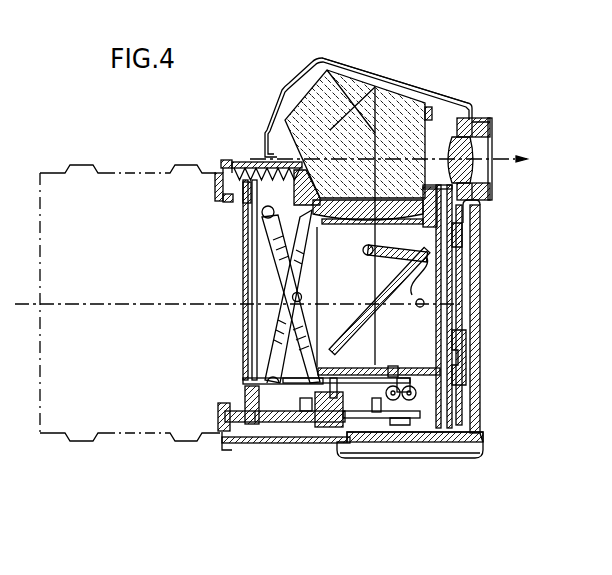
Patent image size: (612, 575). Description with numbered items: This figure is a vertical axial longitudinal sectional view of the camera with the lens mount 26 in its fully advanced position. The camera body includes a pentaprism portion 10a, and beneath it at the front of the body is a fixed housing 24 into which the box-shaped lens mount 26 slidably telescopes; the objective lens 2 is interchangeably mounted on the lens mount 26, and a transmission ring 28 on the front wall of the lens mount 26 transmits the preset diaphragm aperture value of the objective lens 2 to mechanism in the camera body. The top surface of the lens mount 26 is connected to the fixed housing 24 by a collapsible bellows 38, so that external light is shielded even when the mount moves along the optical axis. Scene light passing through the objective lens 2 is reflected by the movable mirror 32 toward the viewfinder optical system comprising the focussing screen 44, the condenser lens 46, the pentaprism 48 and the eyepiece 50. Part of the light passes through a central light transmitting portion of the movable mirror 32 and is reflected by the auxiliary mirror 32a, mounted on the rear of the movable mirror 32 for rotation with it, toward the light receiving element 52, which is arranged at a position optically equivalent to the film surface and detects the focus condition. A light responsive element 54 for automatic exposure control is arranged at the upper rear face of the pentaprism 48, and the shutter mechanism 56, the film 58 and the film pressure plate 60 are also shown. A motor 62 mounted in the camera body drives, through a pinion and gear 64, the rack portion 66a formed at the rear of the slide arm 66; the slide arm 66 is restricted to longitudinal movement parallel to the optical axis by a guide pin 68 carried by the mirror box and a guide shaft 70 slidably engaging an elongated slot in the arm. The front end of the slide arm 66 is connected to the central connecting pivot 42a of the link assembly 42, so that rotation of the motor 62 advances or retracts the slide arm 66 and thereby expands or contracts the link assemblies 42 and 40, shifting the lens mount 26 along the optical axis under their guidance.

The objective lens 2 is at (90, 428).
The pentaprism portion 10a is at (365, 61).
The fixed housing 24 is at (313, 445).
The lens mount 26 is at (227, 445).
The transmission ring 28 is at (218, 163).
The movable mirror 32 is at (362, 323).
The auxiliary mirror 32a is at (393, 362).
The collapsible bellows 38 is at (253, 167).
The link assembly 40 is at (280, 253).
The link assembly 42 is at (280, 448).
The central connecting pivot 42a is at (307, 405).
The focussing screen 44 is at (353, 220).
The condenser lens 46 is at (363, 215).
The pentaprism 48 is at (317, 83).
The eyepiece 50 is at (473, 147).
The light receiving element 52 is at (390, 368).
The light responsive element 54 is at (432, 112).
The shutter mechanism 56 is at (450, 297).
The film 58 is at (463, 247).
The film pressure plate 60 is at (463, 278).
The motor 62 is at (423, 368).
The pinion and gear 64 is at (413, 413).
The slide arm 66 is at (397, 412).
The rack portion 66a is at (392, 412).
The guide pin 68 is at (376, 410).
The guide shaft 70 is at (343, 405).